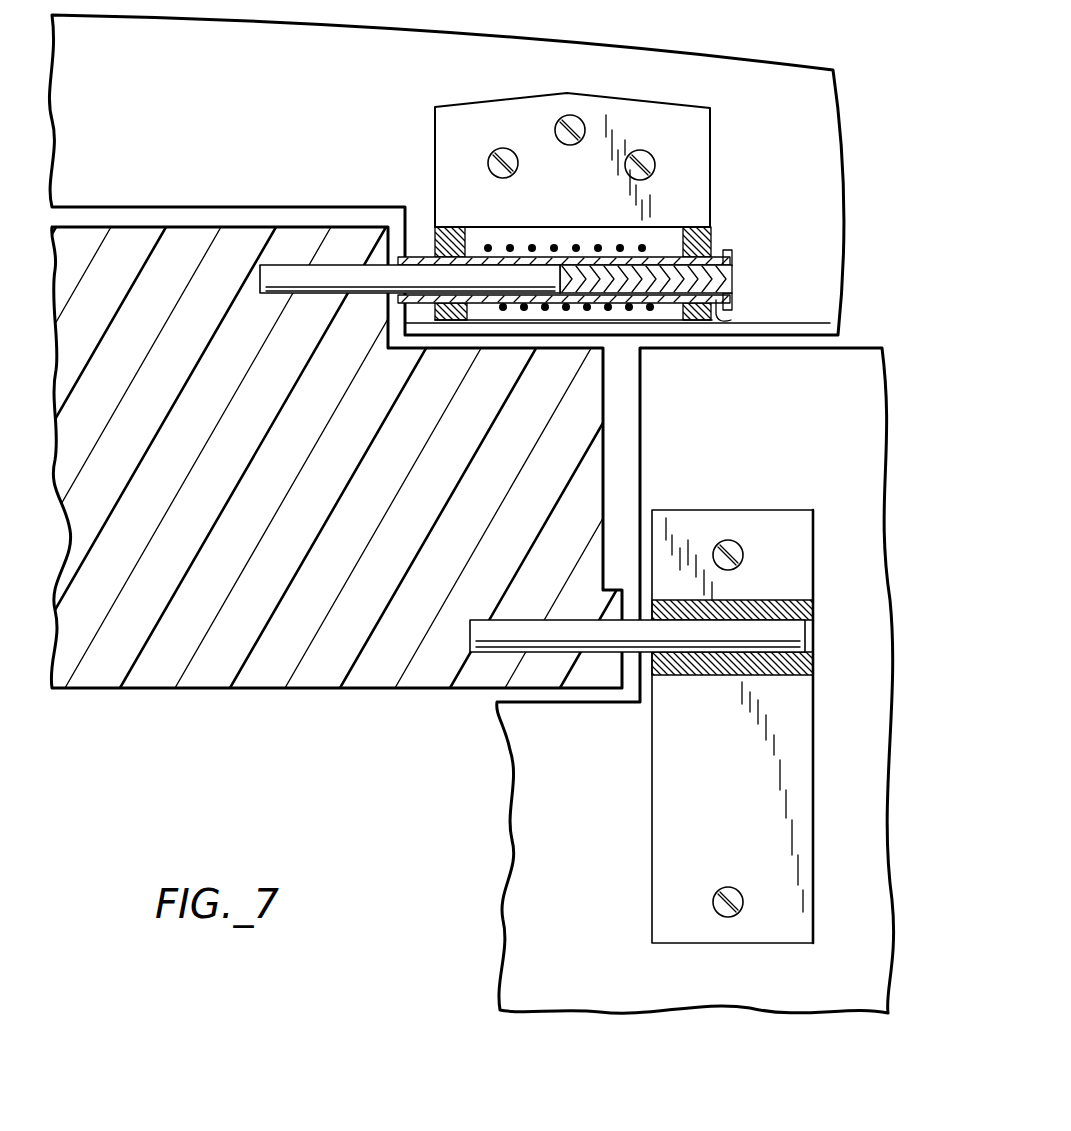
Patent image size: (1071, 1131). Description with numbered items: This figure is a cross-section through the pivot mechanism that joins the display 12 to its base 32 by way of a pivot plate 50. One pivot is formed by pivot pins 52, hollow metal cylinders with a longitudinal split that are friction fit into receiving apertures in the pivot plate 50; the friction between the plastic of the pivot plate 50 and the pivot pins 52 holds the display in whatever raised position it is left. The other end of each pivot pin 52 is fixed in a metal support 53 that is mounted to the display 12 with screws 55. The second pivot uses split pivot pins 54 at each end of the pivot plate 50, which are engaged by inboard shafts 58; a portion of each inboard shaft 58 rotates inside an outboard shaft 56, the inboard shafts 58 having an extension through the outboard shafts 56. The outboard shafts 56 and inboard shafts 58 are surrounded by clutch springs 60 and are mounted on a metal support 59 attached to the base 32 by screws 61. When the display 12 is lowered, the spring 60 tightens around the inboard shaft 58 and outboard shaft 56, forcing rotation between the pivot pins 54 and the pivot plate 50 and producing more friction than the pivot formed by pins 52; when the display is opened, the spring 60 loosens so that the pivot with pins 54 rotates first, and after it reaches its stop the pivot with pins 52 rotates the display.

The display 12 is at (512, 748).
The base 32 is at (722, 66).
The pivot plate 50 is at (353, 678).
The pivot pins 52 is at (793, 633).
The metal support 53 is at (795, 722).
The pivot pins 54 is at (337, 266).
The screws 55 is at (733, 541).
The outboard shafts 56 is at (731, 321).
The inboard shafts 58 is at (423, 253).
The metal support 59 is at (705, 203).
The clutch springs 60 is at (580, 262).
The screws 61 is at (585, 122).